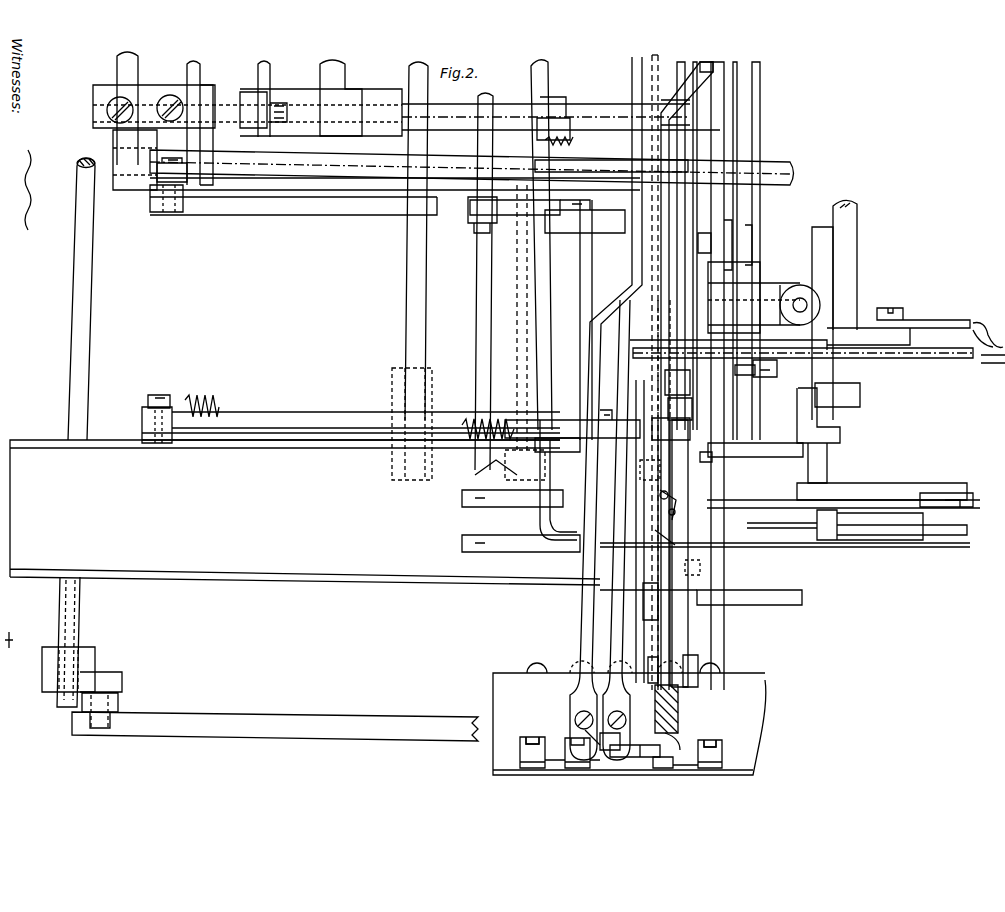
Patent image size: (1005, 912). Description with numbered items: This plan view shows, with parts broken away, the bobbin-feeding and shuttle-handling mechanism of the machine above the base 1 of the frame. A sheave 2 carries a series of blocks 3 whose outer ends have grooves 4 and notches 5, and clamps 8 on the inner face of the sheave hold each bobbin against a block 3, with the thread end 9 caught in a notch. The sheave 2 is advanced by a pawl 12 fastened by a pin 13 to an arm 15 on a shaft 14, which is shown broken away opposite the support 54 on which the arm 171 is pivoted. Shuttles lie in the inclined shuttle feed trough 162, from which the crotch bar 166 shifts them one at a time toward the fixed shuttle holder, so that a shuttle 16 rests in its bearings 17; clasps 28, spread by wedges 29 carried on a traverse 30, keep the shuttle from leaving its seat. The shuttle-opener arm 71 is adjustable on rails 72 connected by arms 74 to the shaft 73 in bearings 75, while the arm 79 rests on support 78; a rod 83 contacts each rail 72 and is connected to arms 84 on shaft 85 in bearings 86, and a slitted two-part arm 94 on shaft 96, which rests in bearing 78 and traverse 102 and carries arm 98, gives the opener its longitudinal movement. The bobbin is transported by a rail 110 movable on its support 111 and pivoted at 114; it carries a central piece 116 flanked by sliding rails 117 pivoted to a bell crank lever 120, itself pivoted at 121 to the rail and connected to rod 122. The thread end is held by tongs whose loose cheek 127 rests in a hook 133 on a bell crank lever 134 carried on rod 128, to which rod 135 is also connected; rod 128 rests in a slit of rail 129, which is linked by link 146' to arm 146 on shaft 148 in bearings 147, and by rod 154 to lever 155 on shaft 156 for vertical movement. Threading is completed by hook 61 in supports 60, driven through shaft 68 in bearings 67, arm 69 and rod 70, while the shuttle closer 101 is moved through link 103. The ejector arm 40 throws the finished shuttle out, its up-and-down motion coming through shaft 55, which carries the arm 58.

The base 1 is at (623, 729).
The sheave 2 is at (765, 682).
The blocks 3 is at (520, 760).
The grooves 4 is at (577, 753).
The notches 5 is at (534, 737).
The clamps 8 is at (720, 673).
The thread end 9 is at (673, 762).
The link or pawl 12 is at (275, 726).
The pin 13 is at (104, 681).
The shaft 14 is at (78, 606).
The arm 15 is at (90, 670).
The shuttle 16 is at (722, 457).
The bearings 17 is at (648, 470).
The clasps 28 is at (690, 430).
The wedges 29 is at (740, 442).
The traverse 30 is at (626, 562).
The ejector arm 40 is at (727, 503).
The support 54 is at (213, 145).
The shaft 55 is at (472, 167).
The arm 58 is at (135, 160).
The supports 60 is at (817, 515).
The hook 61 is at (775, 528).
The bearings 67 is at (840, 437).
The shaft 68 is at (812, 240).
The arm 69 is at (865, 490).
The rod 70 is at (973, 500).
The shuttle-opener arm 71 is at (550, 517).
The rails 72 is at (345, 197).
The shaft 73 is at (411, 243).
The arms 74 is at (248, 195).
The bearings 75 is at (392, 468).
The support 78 is at (240, 97).
The arm 79 is at (270, 75).
The rod 83 is at (580, 217).
The arms 84 is at (572, 420).
The shaft 85 is at (547, 78).
The bearings 86 is at (505, 468).
The two part arm 94 is at (578, 160).
The shaft 96 is at (406, 112).
The arm 98 is at (345, 75).
The shuttle closer 101 is at (692, 410).
The traverse 102 is at (661, 52).
The link 103 is at (705, 100).
The rail 110 is at (690, 384).
The support 111 is at (715, 278).
The pivot 114 is at (698, 662).
The central piece 116 is at (678, 690).
The sliding rails 117 is at (648, 662).
The bell crank lever 120 is at (665, 645).
The pivot 121 is at (688, 565).
The rod 122 is at (706, 60).
The loose cheek 127 is at (675, 740).
The rod 128 is at (640, 697).
The rail 129 is at (995, 363).
The hook 133 is at (618, 750).
The bell crank lever 134 is at (580, 732).
The rod 135 is at (570, 697).
The arm 146 is at (898, 327).
The link 146' is at (972, 326).
The bearings 147 is at (858, 352).
The shaft 148 is at (857, 226).
The rod 154 is at (732, 375).
The lever 155 is at (757, 380).
The shaft 156 is at (850, 410).
The shuttle feed trough 162 is at (305, 512).
The crotch bar 166 is at (495, 525).
The arm 171 is at (200, 73).